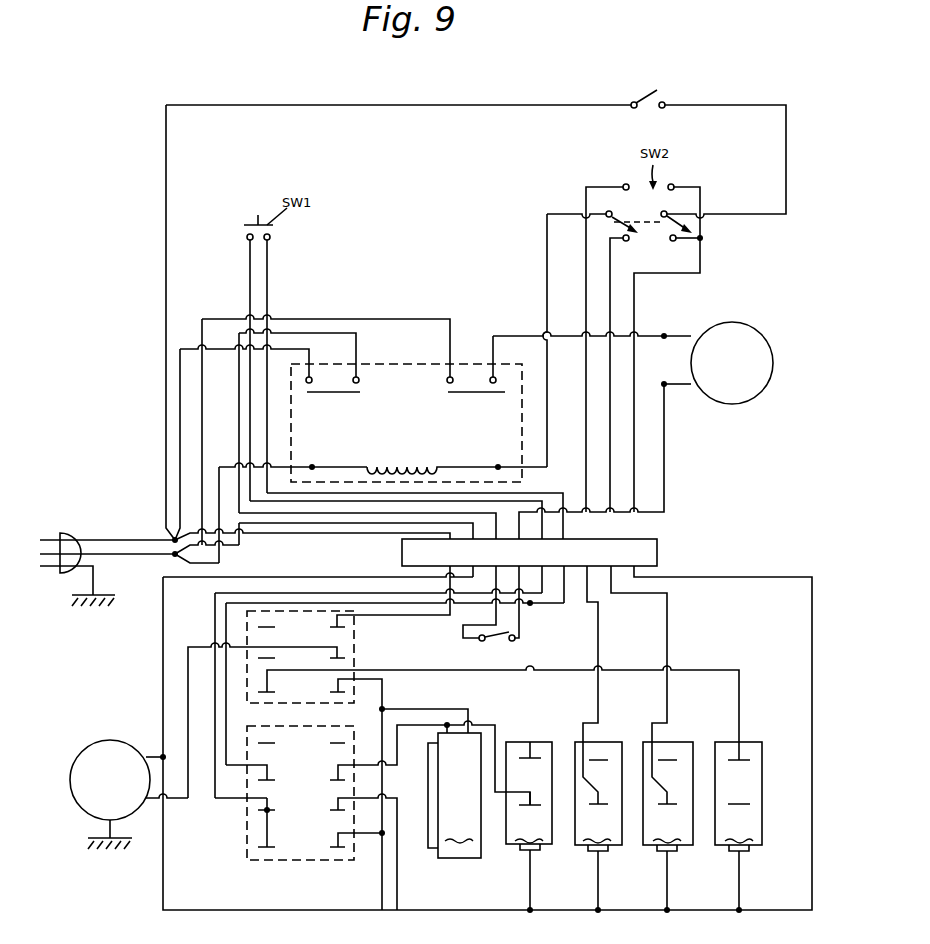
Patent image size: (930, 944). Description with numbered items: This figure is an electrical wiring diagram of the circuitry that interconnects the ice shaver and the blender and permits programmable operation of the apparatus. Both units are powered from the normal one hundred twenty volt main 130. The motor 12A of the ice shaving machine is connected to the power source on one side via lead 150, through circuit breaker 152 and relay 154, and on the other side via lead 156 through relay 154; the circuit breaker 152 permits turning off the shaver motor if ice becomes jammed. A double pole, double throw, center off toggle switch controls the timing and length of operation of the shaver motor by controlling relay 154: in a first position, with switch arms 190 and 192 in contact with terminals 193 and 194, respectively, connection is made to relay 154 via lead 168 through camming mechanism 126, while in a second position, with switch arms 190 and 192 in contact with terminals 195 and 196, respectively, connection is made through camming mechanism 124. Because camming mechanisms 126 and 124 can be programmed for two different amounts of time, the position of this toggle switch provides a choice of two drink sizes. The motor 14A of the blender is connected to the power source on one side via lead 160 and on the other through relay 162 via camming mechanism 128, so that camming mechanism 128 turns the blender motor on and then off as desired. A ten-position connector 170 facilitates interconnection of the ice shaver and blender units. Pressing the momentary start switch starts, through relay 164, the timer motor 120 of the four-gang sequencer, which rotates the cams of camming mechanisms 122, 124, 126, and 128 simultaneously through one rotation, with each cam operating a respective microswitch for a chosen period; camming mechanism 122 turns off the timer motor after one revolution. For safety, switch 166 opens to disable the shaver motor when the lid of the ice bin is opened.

The switch 166 is at (650, 94).
The terminal 195 is at (625, 183).
The terminal 196 is at (673, 183).
The switch arm 190 is at (624, 208).
The switch arm 192 is at (694, 220).
The terminal 193 is at (630, 373).
The terminal 194 is at (683, 251).
The lead 168 is at (547, 282).
The lead 156 is at (650, 333).
The motor 12A is at (756, 323).
The lead 150 is at (666, 446).
The relay 154 is at (419, 366).
The main 130 is at (72, 538).
The ten-position connector 170 is at (660, 545).
The relay 162 is at (356, 648).
The circuit breaker 152 is at (497, 648).
The lead 160 is at (164, 688).
The motor 14A is at (125, 740).
The relay 164 is at (247, 825).
The timer motor 120 is at (454, 795).
The camming mechanism 122 is at (529, 827).
The camming mechanism 124 is at (598, 827).
The camming mechanism 126 is at (668, 827).
The camming mechanism 128 is at (752, 827).